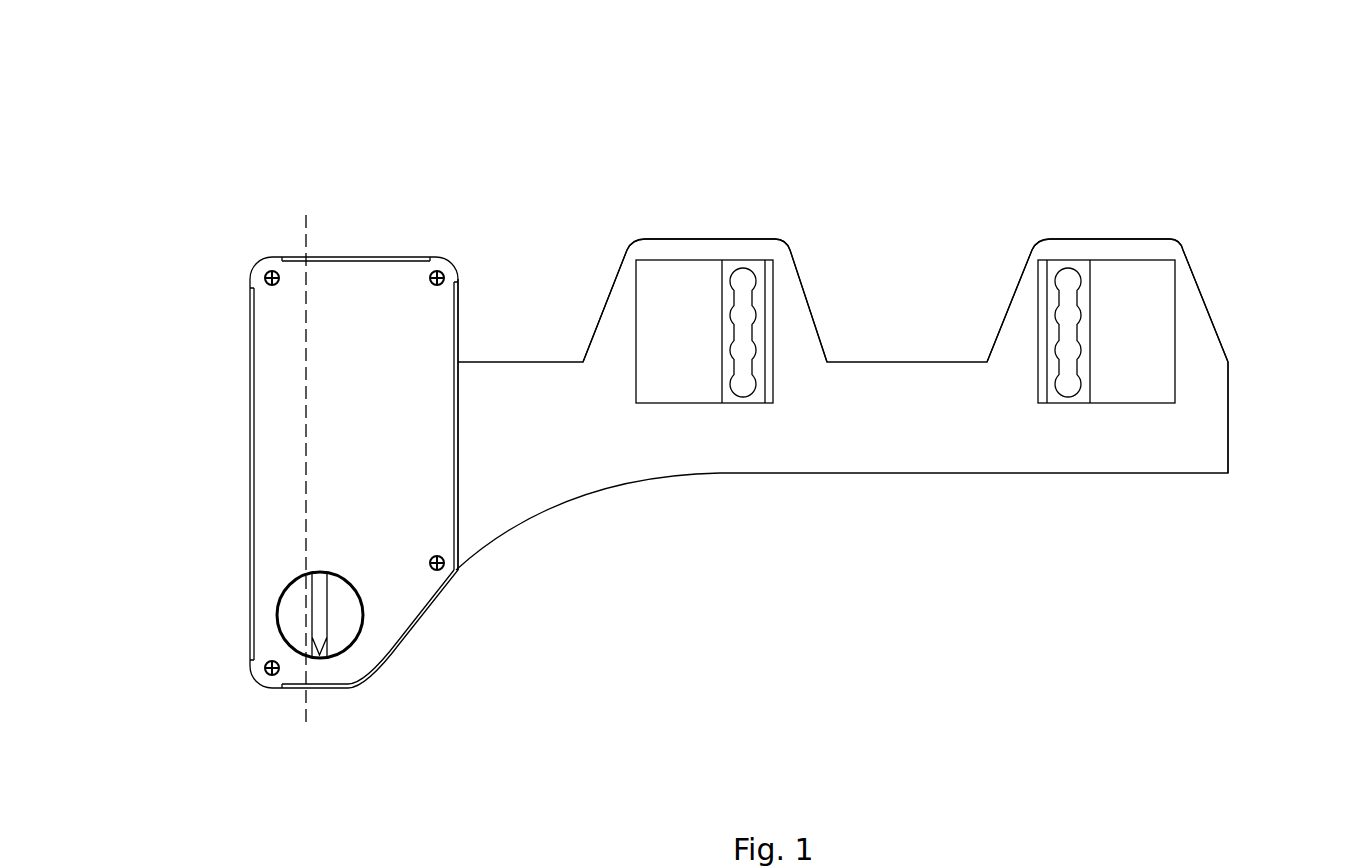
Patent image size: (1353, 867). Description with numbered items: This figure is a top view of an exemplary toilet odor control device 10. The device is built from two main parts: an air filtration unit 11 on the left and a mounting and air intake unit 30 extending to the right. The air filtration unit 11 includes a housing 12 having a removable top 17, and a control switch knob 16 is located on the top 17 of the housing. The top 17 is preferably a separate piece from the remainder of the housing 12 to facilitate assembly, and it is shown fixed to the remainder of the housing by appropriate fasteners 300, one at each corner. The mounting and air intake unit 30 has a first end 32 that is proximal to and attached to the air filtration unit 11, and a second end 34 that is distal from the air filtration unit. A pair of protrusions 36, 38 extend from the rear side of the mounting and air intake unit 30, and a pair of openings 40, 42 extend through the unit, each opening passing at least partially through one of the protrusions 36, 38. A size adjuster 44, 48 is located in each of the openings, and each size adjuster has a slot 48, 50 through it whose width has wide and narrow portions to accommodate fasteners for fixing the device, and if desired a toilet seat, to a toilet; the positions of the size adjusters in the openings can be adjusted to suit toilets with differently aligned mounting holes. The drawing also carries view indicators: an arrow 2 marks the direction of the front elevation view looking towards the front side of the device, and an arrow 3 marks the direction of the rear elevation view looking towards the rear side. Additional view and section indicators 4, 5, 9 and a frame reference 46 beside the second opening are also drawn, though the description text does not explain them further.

The toilet odor control device 10 is at (336, 111).
The air filtration unit 11 is at (405, 594).
The housing 12 is at (343, 257).
The control switch knob 16 is at (340, 625).
The removable top 17 is at (392, 292).
The mounting and air intake unit 30 is at (912, 448).
The first end 32 is at (458, 390).
The second end 34 is at (1228, 420).
The protrusion 36 is at (757, 252).
The protrusion 38 is at (1170, 248).
The opening 40 is at (672, 278).
The opening 42 is at (1147, 288).
The size adjuster 44 is at (763, 297).
The second slot frame 46 is at (1053, 292).
The size adjuster 48 is at (745, 322).
The slot 50 is at (1065, 320).
The fasteners 300 is at (263, 268).
The arrow 2 is at (743, 700).
The arrow 3 is at (693, 100).
The view direction 4 is at (212, 388).
The view direction 5 is at (1290, 388).
The section line 9- 9 is at (306, 205).